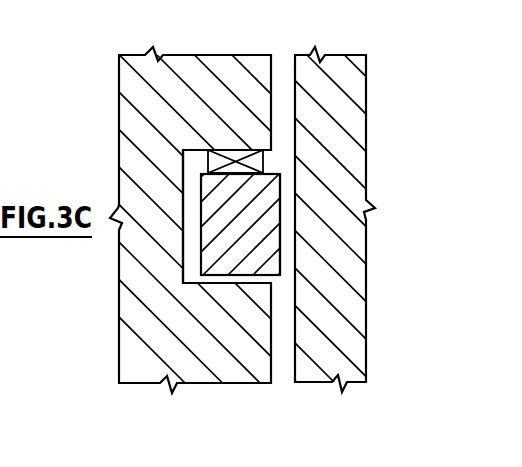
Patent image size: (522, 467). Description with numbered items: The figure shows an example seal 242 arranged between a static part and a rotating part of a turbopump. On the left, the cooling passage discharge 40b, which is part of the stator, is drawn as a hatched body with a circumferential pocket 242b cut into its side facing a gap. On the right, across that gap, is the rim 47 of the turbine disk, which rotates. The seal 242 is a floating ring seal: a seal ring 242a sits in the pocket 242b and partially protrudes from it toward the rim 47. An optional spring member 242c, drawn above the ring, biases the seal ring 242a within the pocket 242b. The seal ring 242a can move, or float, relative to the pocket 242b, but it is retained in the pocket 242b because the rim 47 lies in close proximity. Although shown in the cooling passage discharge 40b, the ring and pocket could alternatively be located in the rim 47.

The cooling passage discharge 40b is at (150, 357).
The rim 47 is at (343, 75).
The seal 242 is at (280, 283).
The seal ring 242a is at (274, 170).
The circumferential pocket 242b is at (196, 168).
The spring member 242c is at (234, 166).